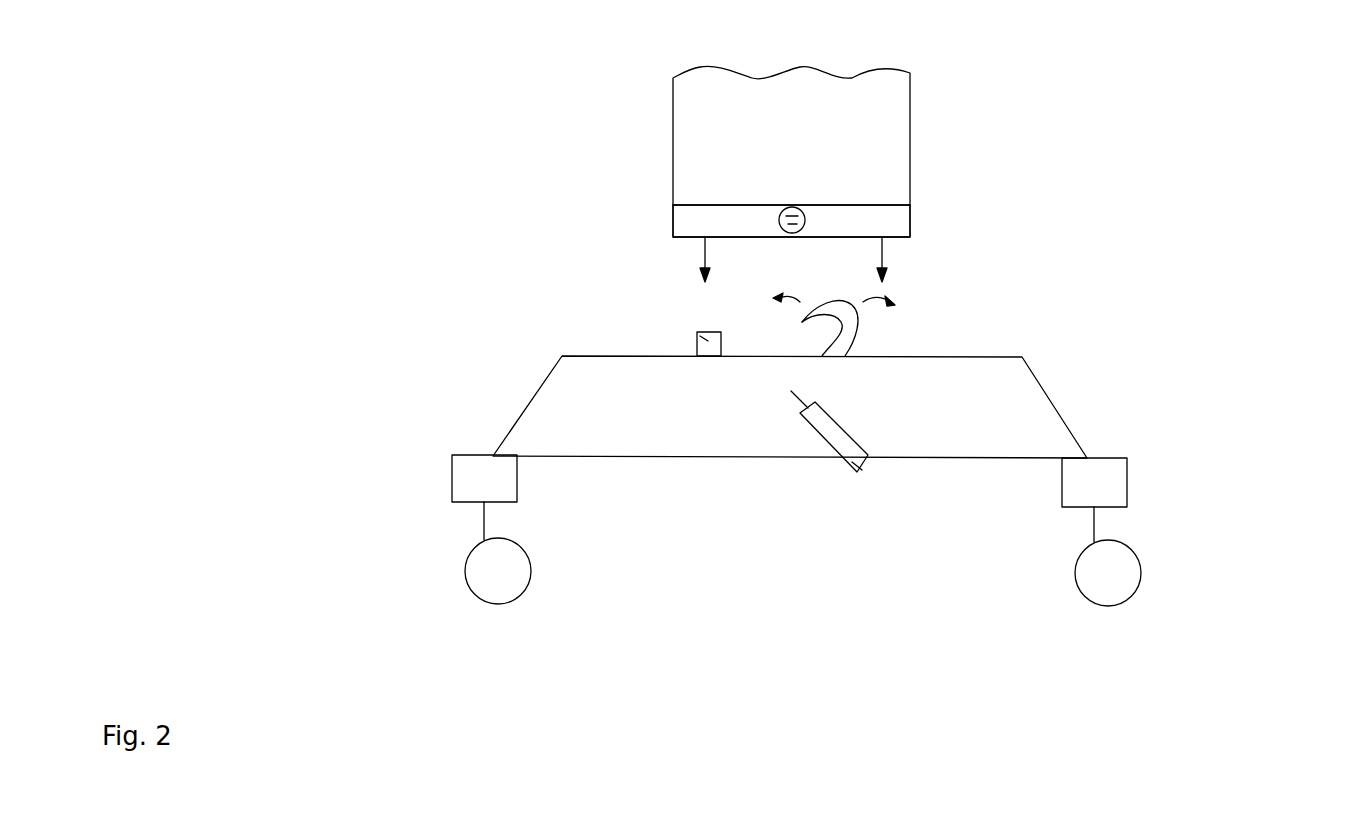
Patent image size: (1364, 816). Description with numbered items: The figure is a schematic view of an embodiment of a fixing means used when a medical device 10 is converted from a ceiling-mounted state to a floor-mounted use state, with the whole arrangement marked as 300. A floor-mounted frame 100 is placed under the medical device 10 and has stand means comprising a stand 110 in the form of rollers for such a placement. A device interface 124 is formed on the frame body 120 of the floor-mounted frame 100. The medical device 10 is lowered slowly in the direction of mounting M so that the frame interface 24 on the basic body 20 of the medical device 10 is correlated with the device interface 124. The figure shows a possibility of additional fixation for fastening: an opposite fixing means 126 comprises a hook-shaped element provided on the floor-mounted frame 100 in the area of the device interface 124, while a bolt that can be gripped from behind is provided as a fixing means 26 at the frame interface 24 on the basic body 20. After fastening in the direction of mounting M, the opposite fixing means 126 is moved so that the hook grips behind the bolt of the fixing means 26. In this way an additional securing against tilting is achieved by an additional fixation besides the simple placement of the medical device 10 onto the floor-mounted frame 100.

The medical device 10 is at (955, 88).
The basic body 20 is at (905, 133).
The frame interface 24 is at (903, 229).
The fixing means 26 is at (800, 227).
The working environment 300 is at (1213, 216).
The floor-mounted frame 100 is at (455, 385).
The frame body 120 is at (527, 436).
The device interface 124 is at (749, 346).
The opposite fixing means 126 is at (843, 342).
The stand 110 is at (478, 582).